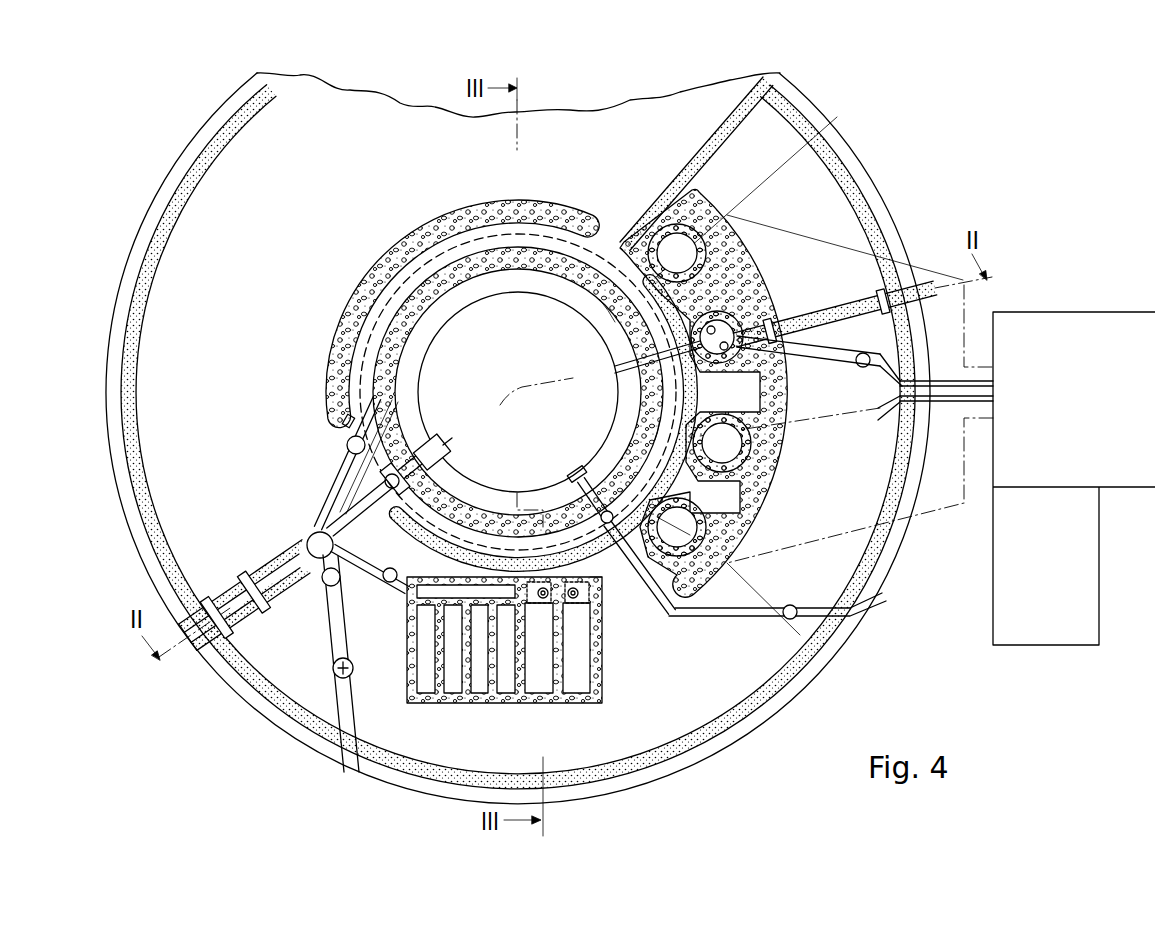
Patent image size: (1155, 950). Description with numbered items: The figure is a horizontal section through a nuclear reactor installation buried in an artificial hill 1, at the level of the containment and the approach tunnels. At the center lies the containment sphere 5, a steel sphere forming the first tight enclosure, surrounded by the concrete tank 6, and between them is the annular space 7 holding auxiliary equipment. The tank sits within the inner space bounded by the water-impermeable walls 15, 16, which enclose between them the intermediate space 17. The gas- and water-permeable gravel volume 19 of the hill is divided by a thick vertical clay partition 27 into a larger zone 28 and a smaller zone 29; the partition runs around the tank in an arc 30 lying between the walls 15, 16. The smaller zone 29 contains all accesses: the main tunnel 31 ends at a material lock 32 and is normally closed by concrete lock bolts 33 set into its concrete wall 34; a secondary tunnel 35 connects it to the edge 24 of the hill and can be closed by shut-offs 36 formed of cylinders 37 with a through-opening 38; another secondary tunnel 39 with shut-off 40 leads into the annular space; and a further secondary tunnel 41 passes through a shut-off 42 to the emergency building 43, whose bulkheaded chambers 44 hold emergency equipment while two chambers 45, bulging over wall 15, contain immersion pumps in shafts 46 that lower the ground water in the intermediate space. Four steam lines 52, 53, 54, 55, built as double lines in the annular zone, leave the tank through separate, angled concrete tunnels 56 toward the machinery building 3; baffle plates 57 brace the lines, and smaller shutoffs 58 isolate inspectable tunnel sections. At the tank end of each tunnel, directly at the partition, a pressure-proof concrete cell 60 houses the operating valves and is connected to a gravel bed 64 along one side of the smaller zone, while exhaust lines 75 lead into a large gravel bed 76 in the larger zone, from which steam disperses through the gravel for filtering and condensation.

The hill 1 is at (873, 175).
The machinery building 3 is at (1036, 312).
The containment 5 is at (530, 294).
The concrete tank 6 is at (478, 274).
The annular space 7 is at (512, 252).
The wall 15 is at (404, 522).
The wall 16 is at (476, 528).
The intermediate space 17 is at (599, 581).
The gravel volume 19 is at (460, 452).
The edge of the hill 24 is at (768, 88).
The partition 27 is at (290, 515).
The larger zone 28 is at (424, 132).
The smaller zone 29 is at (804, 496).
The arc 30 is at (581, 563).
The main tunnel 31 is at (215, 597).
The material lock 32 is at (449, 447).
The lock bolts 33 is at (278, 594).
The concrete wall 34 is at (262, 558).
The secondary tunnel 35 is at (343, 627).
The shut-offs 36 is at (341, 583).
The cylinder 37 is at (352, 664).
The through-opening 38 is at (333, 670).
The secondary tunnel 39 is at (345, 424).
The shut-off 40 is at (348, 450).
The secondary tunnel 41 is at (385, 566).
The shut-off 42 is at (391, 584).
The emergency building 43 is at (505, 704).
The individual chambers 44 is at (478, 690).
The chambers 45 is at (575, 690).
The shaft 46 is at (543, 604).
The steam line 52 is at (607, 313).
The steam line 53 is at (628, 366).
The steam line 54 is at (663, 426).
The steam line 55 is at (620, 476).
The tunnels 56 is at (822, 352).
The baffle plates 57 is at (741, 340).
The shutoffs 58 is at (775, 323).
The concrete cell 60 is at (688, 281).
The gravel bed 64 is at (765, 287).
The exhaust lines 75 is at (464, 299).
The gravel bed 76 is at (393, 278).